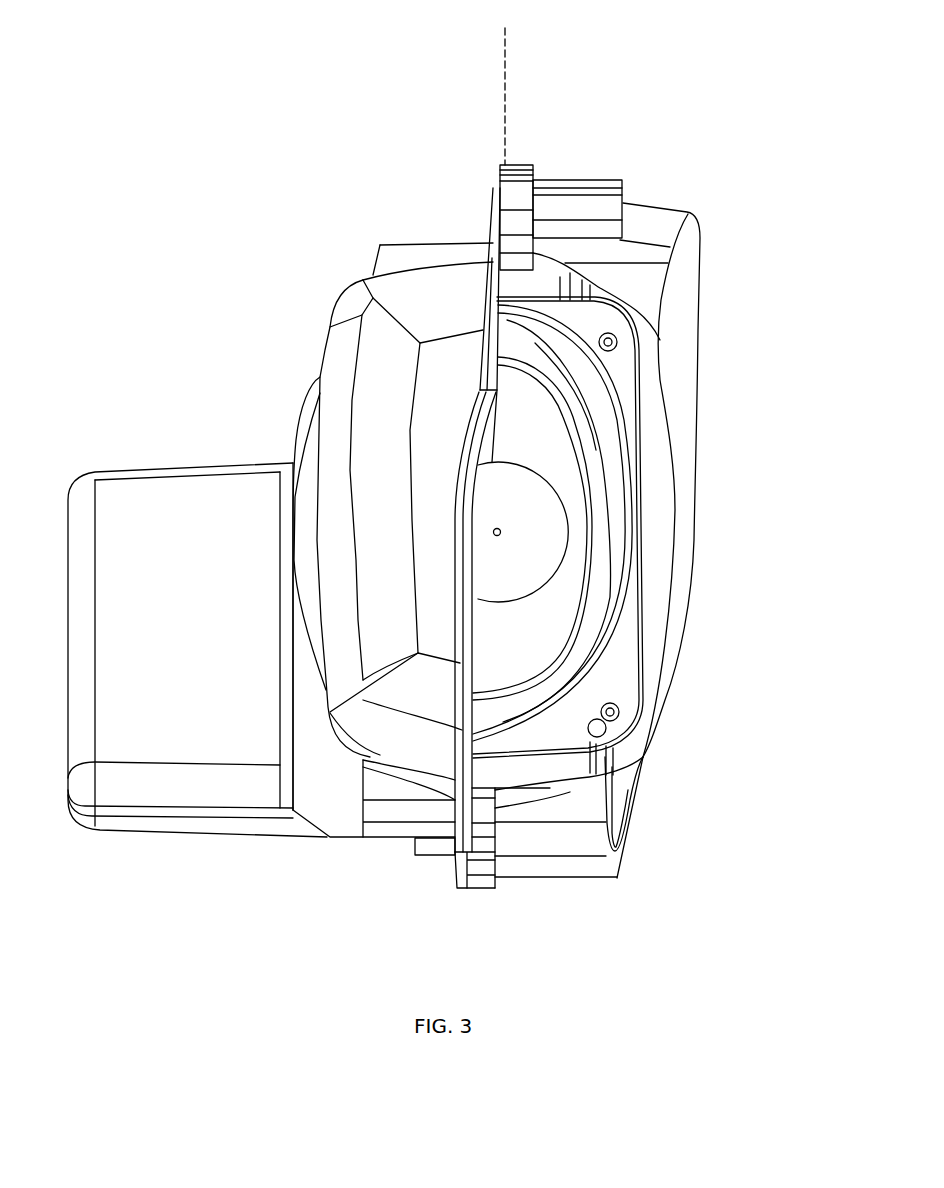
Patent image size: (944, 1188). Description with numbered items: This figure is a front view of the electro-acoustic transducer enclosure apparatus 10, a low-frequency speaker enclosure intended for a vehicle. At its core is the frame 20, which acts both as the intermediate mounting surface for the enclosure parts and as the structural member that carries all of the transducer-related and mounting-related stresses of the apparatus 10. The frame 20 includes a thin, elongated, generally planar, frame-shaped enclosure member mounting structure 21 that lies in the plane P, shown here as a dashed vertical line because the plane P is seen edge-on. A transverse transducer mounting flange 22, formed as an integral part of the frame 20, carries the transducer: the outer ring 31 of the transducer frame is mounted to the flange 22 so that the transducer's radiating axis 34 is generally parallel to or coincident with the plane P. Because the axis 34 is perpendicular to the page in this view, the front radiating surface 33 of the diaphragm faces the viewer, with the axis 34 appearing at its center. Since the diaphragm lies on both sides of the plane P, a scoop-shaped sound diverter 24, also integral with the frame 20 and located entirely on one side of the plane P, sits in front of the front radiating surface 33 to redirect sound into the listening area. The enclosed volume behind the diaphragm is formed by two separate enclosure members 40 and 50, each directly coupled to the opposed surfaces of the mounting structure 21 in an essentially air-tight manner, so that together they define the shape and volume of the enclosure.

The electro-acoustic transducer enclosure apparatus 10 is at (743, 475).
The frame 20 is at (462, 872).
The enclosure member mounting structure 21 is at (518, 163).
The transverse transducer mounting flange 22 is at (650, 711).
The sound diverter 24 is at (357, 298).
The outer ring 31 is at (628, 660).
The front radiating surface 33 is at (622, 513).
The axis 34 is at (500, 532).
The enclosure member 40 is at (693, 285).
The enclosure member 50 is at (170, 488).
The plane P is at (499, 108).